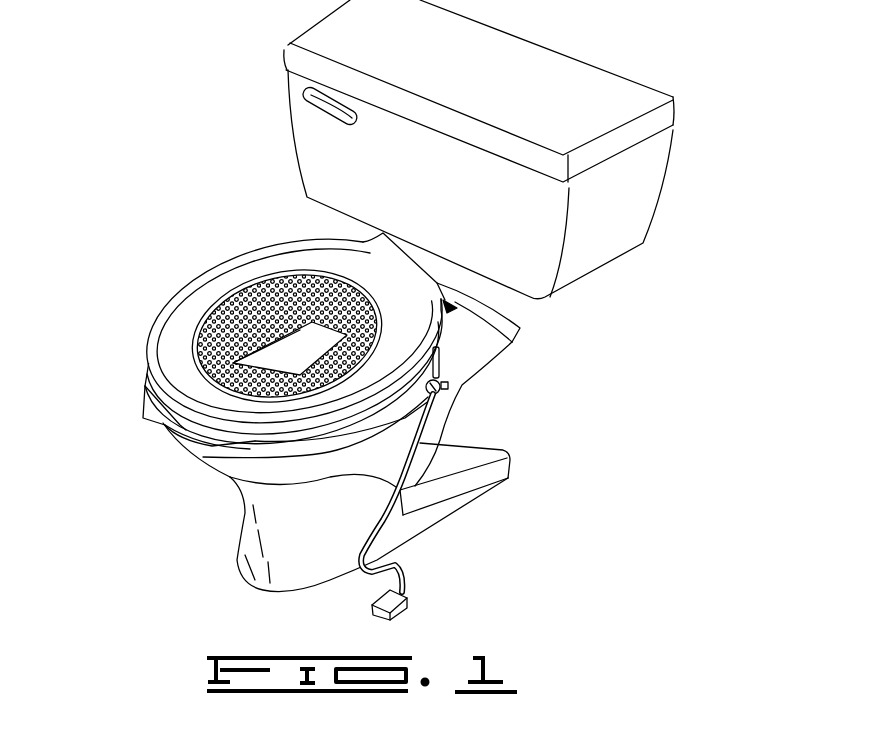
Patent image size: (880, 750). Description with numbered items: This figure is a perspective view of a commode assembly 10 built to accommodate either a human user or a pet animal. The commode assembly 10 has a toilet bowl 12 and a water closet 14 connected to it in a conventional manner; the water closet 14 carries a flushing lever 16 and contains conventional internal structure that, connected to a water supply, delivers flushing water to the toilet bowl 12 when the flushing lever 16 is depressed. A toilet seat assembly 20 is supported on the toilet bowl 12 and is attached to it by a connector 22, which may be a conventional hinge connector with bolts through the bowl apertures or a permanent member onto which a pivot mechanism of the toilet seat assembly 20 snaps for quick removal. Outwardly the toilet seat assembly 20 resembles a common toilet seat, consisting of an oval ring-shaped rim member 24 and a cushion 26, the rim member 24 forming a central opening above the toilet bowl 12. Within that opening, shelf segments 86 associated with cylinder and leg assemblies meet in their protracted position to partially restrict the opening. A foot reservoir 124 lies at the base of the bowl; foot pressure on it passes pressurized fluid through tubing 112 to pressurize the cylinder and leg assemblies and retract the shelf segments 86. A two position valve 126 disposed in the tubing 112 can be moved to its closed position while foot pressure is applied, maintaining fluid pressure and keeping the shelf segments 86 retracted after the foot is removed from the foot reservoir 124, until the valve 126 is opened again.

The commode assembly 10 is at (237, 179).
The toilet bowl 12 is at (257, 535).
The water closet 14 is at (653, 173).
The flushing lever 16 is at (352, 124).
The toilet seat assembly 20 is at (136, 335).
The connector 22 is at (457, 303).
The rim member 24 is at (165, 425).
The cushion 26 is at (227, 282).
The shelf segment 86 is at (327, 290).
The tubing 112 is at (420, 443).
The foot reservoir 124 is at (395, 598).
The two position valve 126 is at (470, 368).